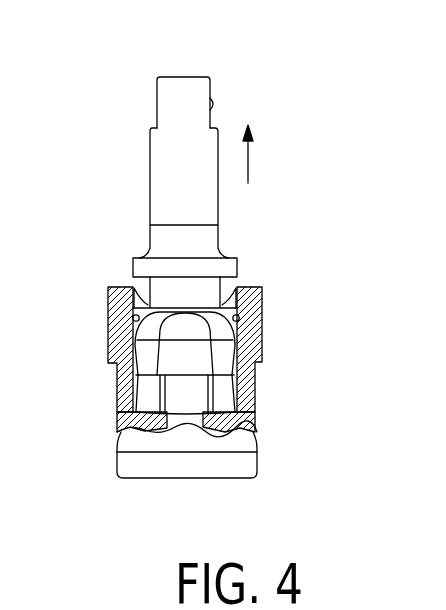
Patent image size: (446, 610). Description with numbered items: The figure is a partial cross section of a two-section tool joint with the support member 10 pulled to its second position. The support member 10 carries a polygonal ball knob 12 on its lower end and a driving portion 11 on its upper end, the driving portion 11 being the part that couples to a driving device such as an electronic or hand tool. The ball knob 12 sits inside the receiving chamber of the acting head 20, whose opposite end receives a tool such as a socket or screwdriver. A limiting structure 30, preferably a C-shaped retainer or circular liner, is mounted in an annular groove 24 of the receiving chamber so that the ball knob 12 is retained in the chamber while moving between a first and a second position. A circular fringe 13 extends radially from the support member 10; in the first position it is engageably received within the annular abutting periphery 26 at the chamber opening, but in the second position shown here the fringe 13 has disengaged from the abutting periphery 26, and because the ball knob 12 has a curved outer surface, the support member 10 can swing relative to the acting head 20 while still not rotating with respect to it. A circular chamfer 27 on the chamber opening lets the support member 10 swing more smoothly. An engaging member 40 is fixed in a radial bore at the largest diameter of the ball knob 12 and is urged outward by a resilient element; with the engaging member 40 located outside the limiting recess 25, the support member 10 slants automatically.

The support member 10 is at (190, 198).
The driving portion 11 is at (185, 85).
The polygonal ball knob 12 is at (180, 342).
The circular fringe 13 is at (217, 266).
The acting head 20 is at (245, 463).
The annular groove 24 is at (133, 318).
The limiting recess 25 is at (233, 370).
The annular abutting periphery 26 is at (240, 290).
The circular chamfer 27 is at (133, 288).
The limiting structure 30 is at (242, 318).
The engaging member 40 is at (240, 338).